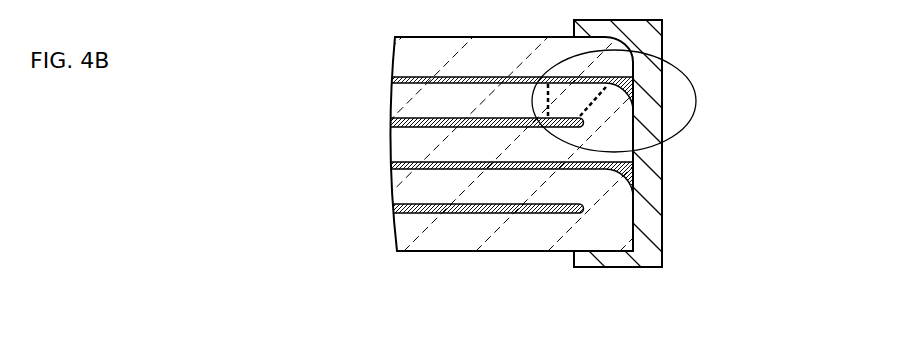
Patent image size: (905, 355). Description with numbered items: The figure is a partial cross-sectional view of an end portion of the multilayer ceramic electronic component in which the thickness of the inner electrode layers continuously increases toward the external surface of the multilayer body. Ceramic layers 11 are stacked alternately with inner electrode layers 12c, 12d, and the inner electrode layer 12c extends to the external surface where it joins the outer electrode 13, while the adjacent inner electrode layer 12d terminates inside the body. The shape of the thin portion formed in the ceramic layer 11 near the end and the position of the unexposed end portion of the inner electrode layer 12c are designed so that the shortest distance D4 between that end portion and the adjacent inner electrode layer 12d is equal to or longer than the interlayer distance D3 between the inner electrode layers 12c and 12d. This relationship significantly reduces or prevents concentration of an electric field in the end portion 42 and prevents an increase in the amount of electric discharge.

The ceramic layer 11 is at (405, 52).
The inner electrode layer 12c is at (397, 79).
The inner electrode layer 12d is at (397, 123).
The outer electrode 13 is at (657, 43).
The end portion 42 is at (697, 90).
The interlayer distance D3 is at (545, 100).
The shortest distance D4 is at (585, 106).